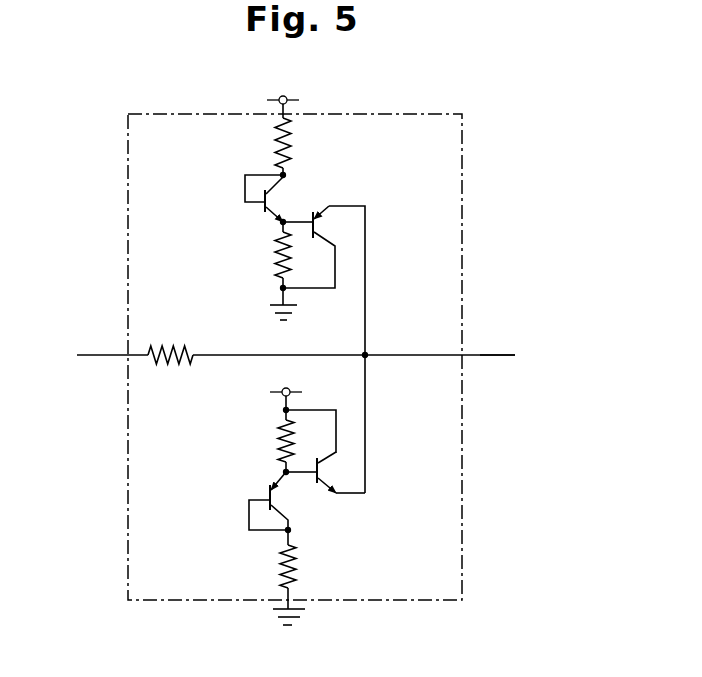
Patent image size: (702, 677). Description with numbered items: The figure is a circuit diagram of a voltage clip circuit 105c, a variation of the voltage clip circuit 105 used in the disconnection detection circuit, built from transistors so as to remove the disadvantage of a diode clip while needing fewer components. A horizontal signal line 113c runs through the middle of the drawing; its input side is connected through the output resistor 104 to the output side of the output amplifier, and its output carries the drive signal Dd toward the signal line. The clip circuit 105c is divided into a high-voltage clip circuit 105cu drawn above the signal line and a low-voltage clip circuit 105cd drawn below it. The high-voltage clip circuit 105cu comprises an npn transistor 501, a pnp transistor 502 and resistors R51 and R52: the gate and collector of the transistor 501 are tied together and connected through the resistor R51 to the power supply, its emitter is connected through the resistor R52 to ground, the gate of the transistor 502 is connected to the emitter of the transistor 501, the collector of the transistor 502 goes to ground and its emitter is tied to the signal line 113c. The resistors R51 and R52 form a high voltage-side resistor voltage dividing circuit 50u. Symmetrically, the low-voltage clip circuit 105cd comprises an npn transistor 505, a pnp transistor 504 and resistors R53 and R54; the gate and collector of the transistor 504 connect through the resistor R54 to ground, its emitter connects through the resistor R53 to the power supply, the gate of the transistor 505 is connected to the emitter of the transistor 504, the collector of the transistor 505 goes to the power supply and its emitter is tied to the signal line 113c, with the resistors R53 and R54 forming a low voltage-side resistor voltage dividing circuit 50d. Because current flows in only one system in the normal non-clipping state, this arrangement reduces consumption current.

The voltage clip circuit 105 is at (351, 337).
The voltage clip circuit 105c is at (520, 98).
The high-voltage clip circuit 105cu is at (373, 291).
The low-voltage clip circuit 105cd is at (379, 504).
The high voltage-side resistor voltage dividing circuit 50u is at (321, 291).
The low voltage-side resistor voltage dividing circuit 50d is at (328, 504).
The output resistor 104 is at (165, 350).
The signal line 113c is at (385, 354).
The npn transistor 501 is at (262, 208).
The pnp transistor 502 is at (323, 207).
The pnp transistor 504 is at (268, 487).
The npn transistor 505 is at (308, 492).
The resistor R51 is at (290, 150).
The resistor R52 is at (278, 257).
The resistor R53 is at (280, 432).
The resistor R54 is at (280, 570).
The drive signal Dd is at (485, 354).